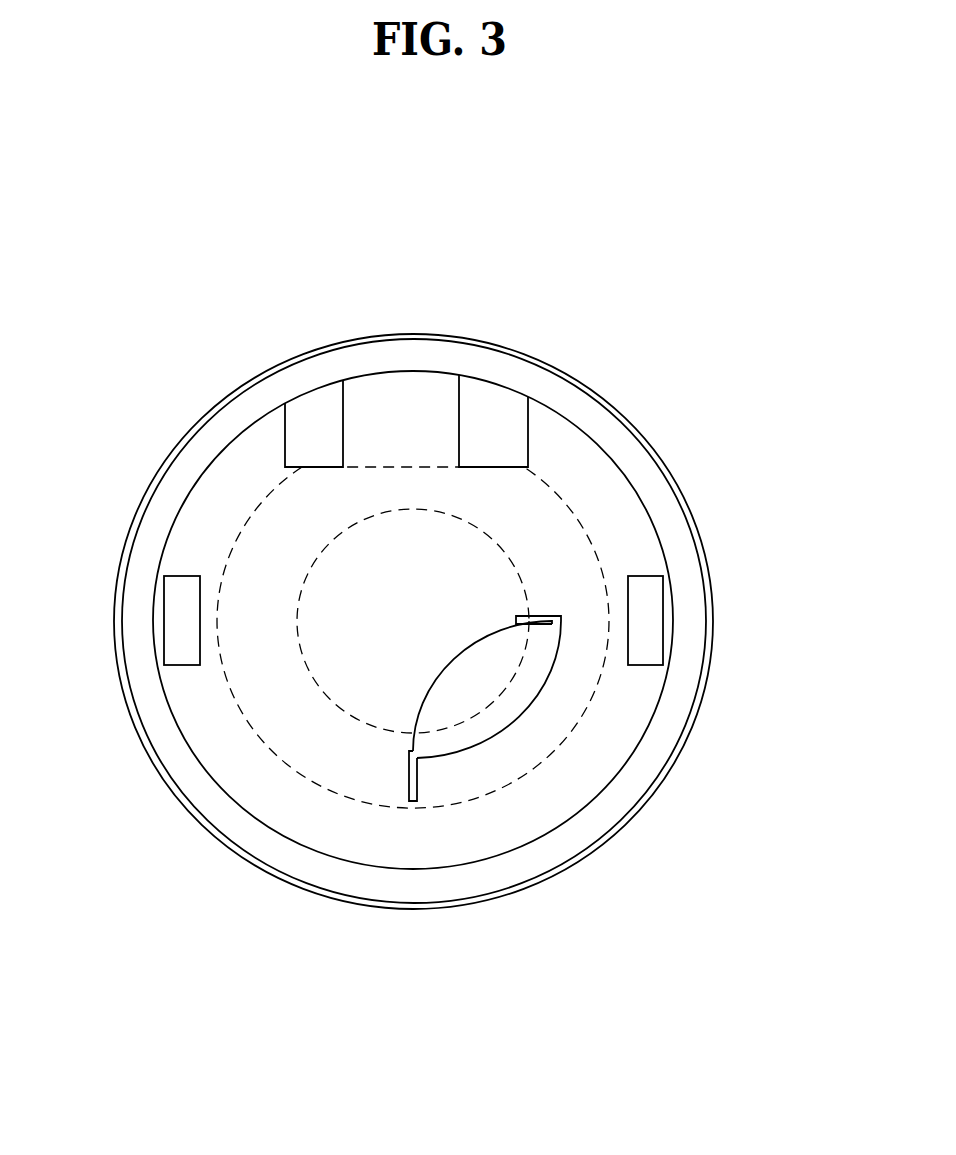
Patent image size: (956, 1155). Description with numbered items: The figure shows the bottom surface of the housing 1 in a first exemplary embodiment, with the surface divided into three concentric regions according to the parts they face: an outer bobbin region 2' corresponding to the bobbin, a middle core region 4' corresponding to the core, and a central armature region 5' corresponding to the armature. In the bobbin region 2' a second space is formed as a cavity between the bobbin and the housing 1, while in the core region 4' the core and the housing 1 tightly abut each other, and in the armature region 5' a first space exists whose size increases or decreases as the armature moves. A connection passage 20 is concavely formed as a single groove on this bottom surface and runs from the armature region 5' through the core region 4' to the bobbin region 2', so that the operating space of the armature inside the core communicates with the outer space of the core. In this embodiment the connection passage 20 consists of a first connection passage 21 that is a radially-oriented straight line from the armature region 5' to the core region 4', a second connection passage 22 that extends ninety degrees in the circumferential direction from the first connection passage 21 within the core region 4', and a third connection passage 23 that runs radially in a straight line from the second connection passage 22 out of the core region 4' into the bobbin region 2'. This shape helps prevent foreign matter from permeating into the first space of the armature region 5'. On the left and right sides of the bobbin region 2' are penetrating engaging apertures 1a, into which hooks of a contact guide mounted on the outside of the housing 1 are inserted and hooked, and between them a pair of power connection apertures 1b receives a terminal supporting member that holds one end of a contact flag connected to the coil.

The housing 1 is at (149, 752).
The engaging aperture 1a is at (179, 622).
The power connection aperture 1b is at (316, 405).
The bobbin region 2' is at (413, 680).
The core region 4' is at (363, 617).
The armature region 5' is at (508, 572).
The connection passage 20 is at (615, 732).
The first connection passage 21 is at (556, 614).
The second connection passage 22 is at (522, 715).
The third connection passage 23 is at (417, 783).